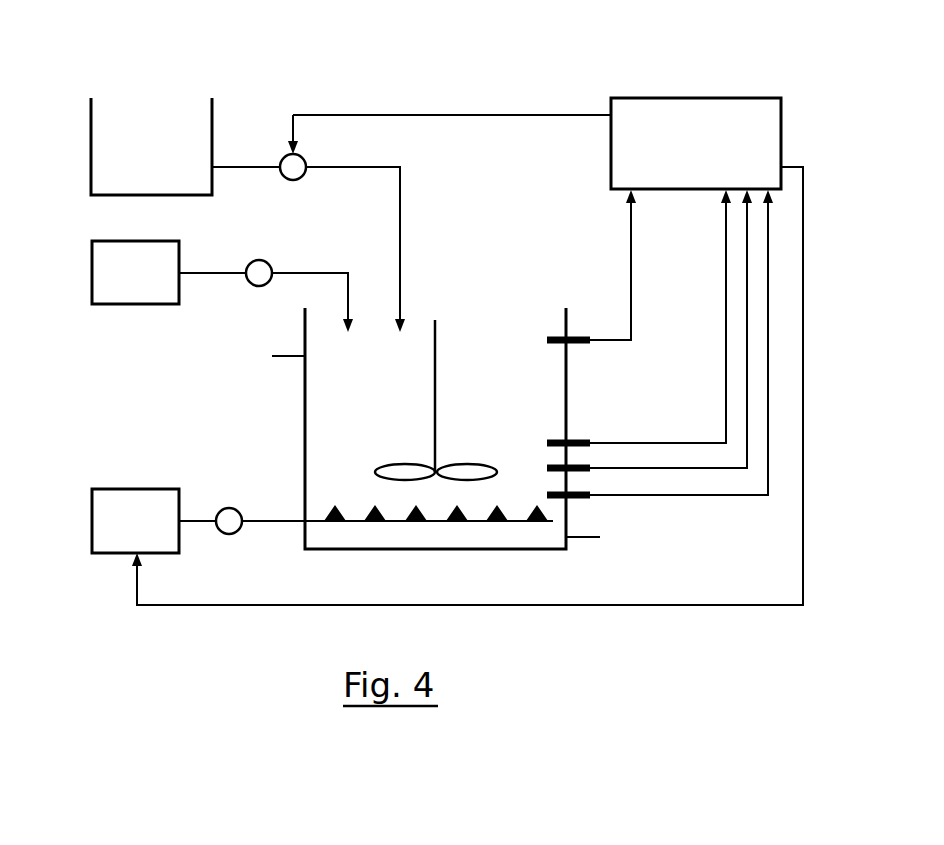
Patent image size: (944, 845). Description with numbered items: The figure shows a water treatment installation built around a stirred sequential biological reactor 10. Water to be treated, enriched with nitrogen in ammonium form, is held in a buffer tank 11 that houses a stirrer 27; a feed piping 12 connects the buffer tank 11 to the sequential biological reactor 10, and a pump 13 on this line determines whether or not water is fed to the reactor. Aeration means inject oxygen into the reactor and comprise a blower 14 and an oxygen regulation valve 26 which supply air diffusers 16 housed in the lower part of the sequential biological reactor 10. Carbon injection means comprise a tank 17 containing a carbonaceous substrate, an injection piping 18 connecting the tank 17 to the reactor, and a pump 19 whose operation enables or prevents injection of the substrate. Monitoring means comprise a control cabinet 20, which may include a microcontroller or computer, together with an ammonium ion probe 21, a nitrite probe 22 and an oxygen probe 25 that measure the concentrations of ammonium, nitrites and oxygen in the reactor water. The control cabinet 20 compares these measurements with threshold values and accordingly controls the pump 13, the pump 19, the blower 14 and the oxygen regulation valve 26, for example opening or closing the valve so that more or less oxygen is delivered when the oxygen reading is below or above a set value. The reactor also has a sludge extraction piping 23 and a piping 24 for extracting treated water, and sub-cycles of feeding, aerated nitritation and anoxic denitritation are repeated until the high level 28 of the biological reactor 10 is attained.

The sequential biological reactor 10 is at (413, 549).
The buffer tank 11 is at (92, 135).
The feed piping 12 is at (400, 225).
The pump 13 is at (282, 158).
The blower 14 is at (135, 489).
The air diffusers 16 is at (368, 507).
The tank 17 is at (142, 304).
The injection piping 18 is at (211, 273).
The pump 19 is at (272, 248).
The control cabinet 20 is at (678, 98).
The ammonium ion probe 21 is at (580, 500).
The nitrite probe 22 is at (577, 463).
The sludge extraction piping 23 is at (578, 537).
The piping for extracting treated water 24 is at (293, 356).
The oxygen probe 25 is at (570, 438).
The oxygen regulation valve 26 is at (230, 508).
The stirrer 27 is at (435, 406).
The high level 28 is at (580, 335).